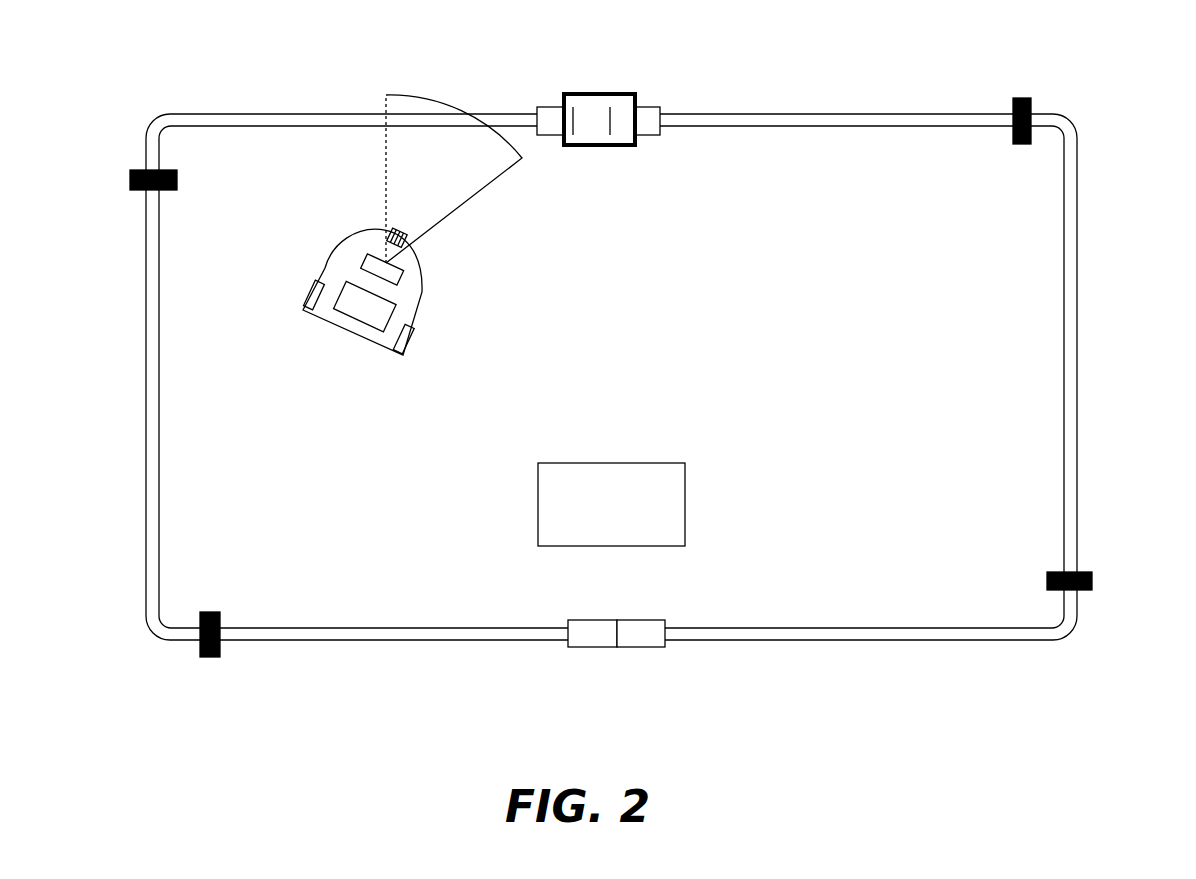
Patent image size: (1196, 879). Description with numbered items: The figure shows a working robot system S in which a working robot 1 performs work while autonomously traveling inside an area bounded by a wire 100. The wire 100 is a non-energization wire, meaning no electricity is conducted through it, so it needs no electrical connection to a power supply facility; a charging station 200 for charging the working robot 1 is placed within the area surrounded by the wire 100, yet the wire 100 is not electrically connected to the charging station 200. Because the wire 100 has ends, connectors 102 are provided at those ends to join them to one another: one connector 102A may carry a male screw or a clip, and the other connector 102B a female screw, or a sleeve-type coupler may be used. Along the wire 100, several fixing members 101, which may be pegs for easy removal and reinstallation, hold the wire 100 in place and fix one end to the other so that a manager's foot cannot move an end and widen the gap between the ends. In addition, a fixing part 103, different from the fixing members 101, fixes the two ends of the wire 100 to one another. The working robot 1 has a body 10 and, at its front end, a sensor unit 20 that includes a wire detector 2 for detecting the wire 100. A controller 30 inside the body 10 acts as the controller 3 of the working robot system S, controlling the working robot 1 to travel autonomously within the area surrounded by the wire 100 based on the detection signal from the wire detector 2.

The working robot system S is at (1122, 82).
The working robot 1 is at (410, 245).
The body 10 is at (420, 313).
The sensor unit 20 is at (441, 193).
The wire detector 2 is at (405, 280).
The controller 30 is at (365, 338).
The controller 3 is at (352, 332).
The wire 100 is at (868, 113).
The fixing members 101 is at (130, 180).
The connectors 102 is at (619, 692).
The connector 102A is at (593, 648).
The connector 102B is at (654, 673).
The fixing part 103 is at (617, 92).
The charging station 200 is at (686, 500).